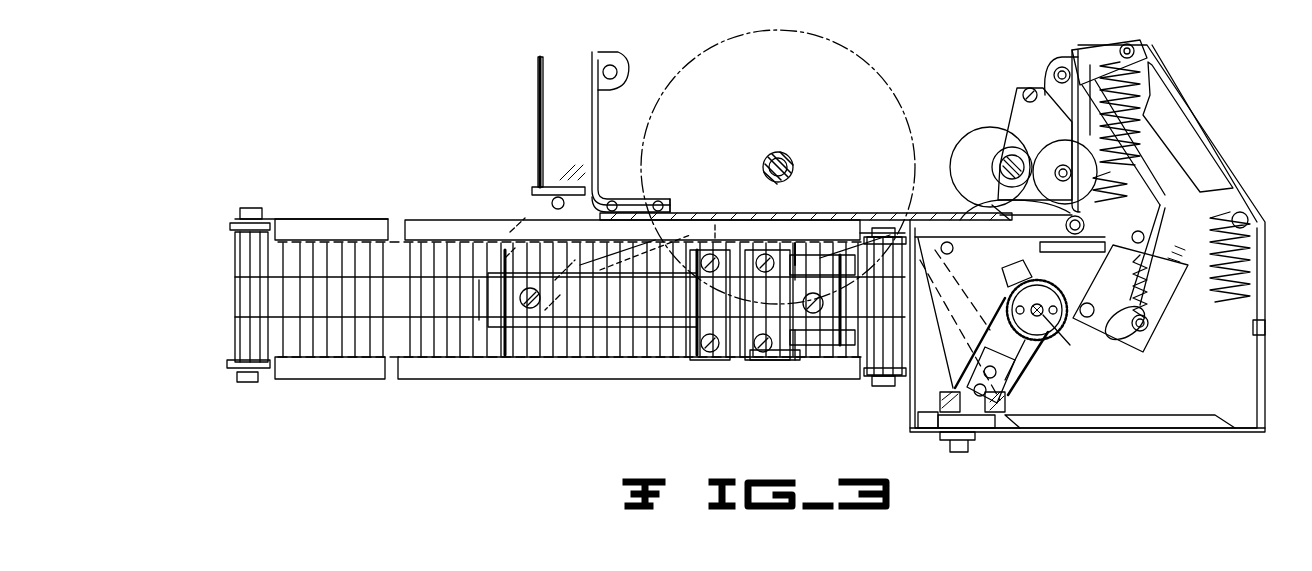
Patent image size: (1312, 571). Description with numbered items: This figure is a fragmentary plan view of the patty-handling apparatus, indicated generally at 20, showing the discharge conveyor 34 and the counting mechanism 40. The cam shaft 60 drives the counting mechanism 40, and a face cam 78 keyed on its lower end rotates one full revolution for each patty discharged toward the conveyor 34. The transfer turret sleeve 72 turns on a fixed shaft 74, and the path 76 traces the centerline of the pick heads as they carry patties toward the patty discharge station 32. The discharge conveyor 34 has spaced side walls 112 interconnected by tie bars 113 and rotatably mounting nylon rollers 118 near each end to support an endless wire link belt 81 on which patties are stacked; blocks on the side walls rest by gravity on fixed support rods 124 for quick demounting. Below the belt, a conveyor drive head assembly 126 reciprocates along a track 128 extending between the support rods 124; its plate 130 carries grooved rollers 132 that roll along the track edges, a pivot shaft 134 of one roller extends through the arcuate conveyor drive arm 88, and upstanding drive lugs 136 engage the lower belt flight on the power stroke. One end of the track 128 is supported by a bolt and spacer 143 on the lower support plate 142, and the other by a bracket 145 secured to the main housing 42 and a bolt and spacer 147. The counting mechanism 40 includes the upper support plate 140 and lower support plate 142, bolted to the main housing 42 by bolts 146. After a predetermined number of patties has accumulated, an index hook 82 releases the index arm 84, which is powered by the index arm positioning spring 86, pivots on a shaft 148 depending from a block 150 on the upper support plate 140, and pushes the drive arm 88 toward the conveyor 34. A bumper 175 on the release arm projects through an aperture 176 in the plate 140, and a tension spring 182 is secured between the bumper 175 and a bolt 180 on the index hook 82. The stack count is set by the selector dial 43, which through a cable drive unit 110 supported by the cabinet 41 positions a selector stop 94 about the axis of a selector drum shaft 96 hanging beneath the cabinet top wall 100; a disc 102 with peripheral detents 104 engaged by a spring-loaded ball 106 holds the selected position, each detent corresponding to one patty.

The conveyor assembly 20 is at (490, 112).
The patty discharge station 32 is at (773, 305).
The discharge conveyor 34 is at (228, 317).
The counting mechanism 40 is at (1105, 400).
The cabinet 41 is at (1177, 437).
The main housing 42 is at (600, 55).
The selector dial 43 is at (960, 440).
The cam shaft 60 is at (998, 165).
The transfer turret sleeve 72 is at (778, 153).
The fixed shaft 74 is at (790, 163).
The centerline path of the pick heads 76 is at (700, 67).
The face cam 78 is at (978, 128).
The endless wire link belt 81 is at (437, 255).
The index hook 82 is at (1150, 230).
The index arm 84 is at (1012, 85).
The index arm positioning spring 86 is at (1150, 82).
The arcuate conveyor drive arm 88 is at (825, 345).
The selector stop 94 is at (1045, 290).
The selector drum shaft 96 is at (1043, 315).
The top wall 100 is at (1180, 108).
The disc 102 is at (1045, 345).
The peripheral detents 104 is at (992, 328).
The spring-loaded ball 106 is at (1037, 290).
The cable drive unit 110 is at (1040, 362).
The side walls 112 is at (382, 203).
The tie bars 113 is at (300, 243).
The nylon rollers 118 is at (240, 252).
The fixed support rods 124 is at (495, 245).
The conveyor drive head assembly 126 is at (832, 258).
The track 128 is at (625, 318).
The plate 130 is at (690, 352).
The grooved rollers 132 is at (735, 262).
The pivot shaft 134 is at (762, 365).
The drive lugs 136 is at (790, 262).
The upper support plate 140 is at (1213, 376).
The lower support plate 142 is at (1035, 66).
The bolt and spacer 143 is at (813, 318).
The bracket 145 is at (548, 207).
The bolts 146 is at (1013, 200).
The bolt and spacer 147 is at (530, 310).
The shaft 148 is at (1010, 230).
The block 150 is at (1082, 213).
The bumper 175 is at (1162, 325).
The aperture 176 is at (1165, 345).
The bolt 180 is at (1058, 145).
The tension spring 182 is at (1145, 280).